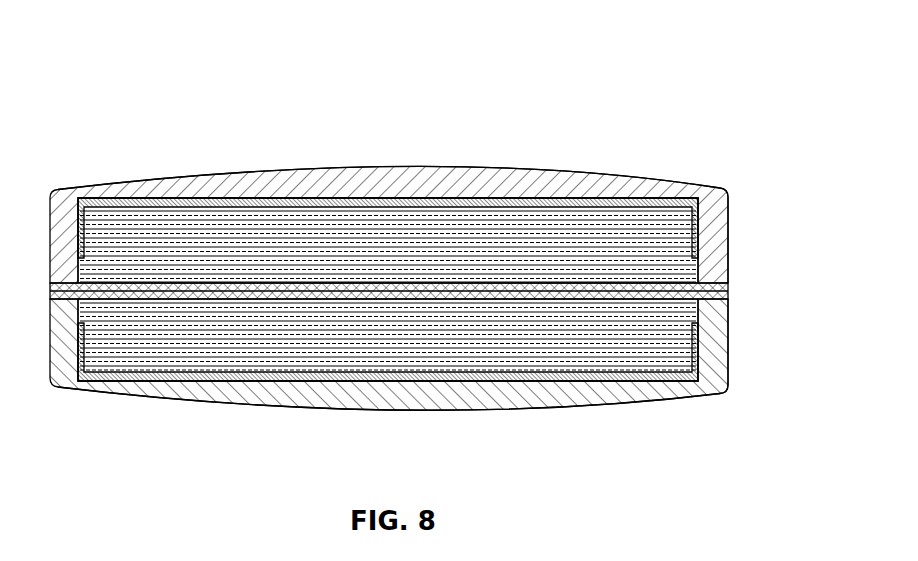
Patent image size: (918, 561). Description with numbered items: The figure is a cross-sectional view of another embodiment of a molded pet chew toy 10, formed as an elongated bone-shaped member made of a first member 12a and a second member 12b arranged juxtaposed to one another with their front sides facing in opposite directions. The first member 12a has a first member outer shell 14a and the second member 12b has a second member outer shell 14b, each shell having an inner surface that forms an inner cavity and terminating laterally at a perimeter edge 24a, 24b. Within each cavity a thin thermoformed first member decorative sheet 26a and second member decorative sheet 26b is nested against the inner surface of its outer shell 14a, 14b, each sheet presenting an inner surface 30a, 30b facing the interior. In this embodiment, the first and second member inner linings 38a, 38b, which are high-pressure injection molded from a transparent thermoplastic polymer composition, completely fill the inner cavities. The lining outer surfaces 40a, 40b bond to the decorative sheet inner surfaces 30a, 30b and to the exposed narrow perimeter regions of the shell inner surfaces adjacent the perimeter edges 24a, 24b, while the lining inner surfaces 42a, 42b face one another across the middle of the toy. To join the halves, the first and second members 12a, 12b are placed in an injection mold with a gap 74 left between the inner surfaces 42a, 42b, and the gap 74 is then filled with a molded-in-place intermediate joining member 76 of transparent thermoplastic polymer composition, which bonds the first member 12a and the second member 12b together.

The molded pet chew toy 10 is at (413, 256).
The first member 12a is at (409, 160).
The second member 12b is at (413, 402).
The first member outer shell 14a is at (283, 180).
The second member outer shell 14b is at (245, 392).
The perimeter edge of first member outer shell 24a is at (708, 278).
The perimeter edge of second member outer shell 24b is at (720, 302).
The first member decorative sheet 26a is at (548, 199).
The second member decorative sheet 26b is at (507, 383).
The inner surface of first member decorative sheet 30a is at (418, 210).
The inner surface of second member decorative sheet 30b is at (417, 376).
The first member inner lining 38a is at (477, 202).
The second member inner lining 38b is at (297, 378).
The outer surface of first member inner lining 40a is at (362, 197).
The outer surface of second member inner lining 40b is at (368, 374).
The inner surface of first member inner lining 42a is at (207, 293).
The inner surface of second member inner lining 42b is at (506, 294).
The gap 74 is at (122, 296).
The intermediate joining member 76 is at (150, 292).